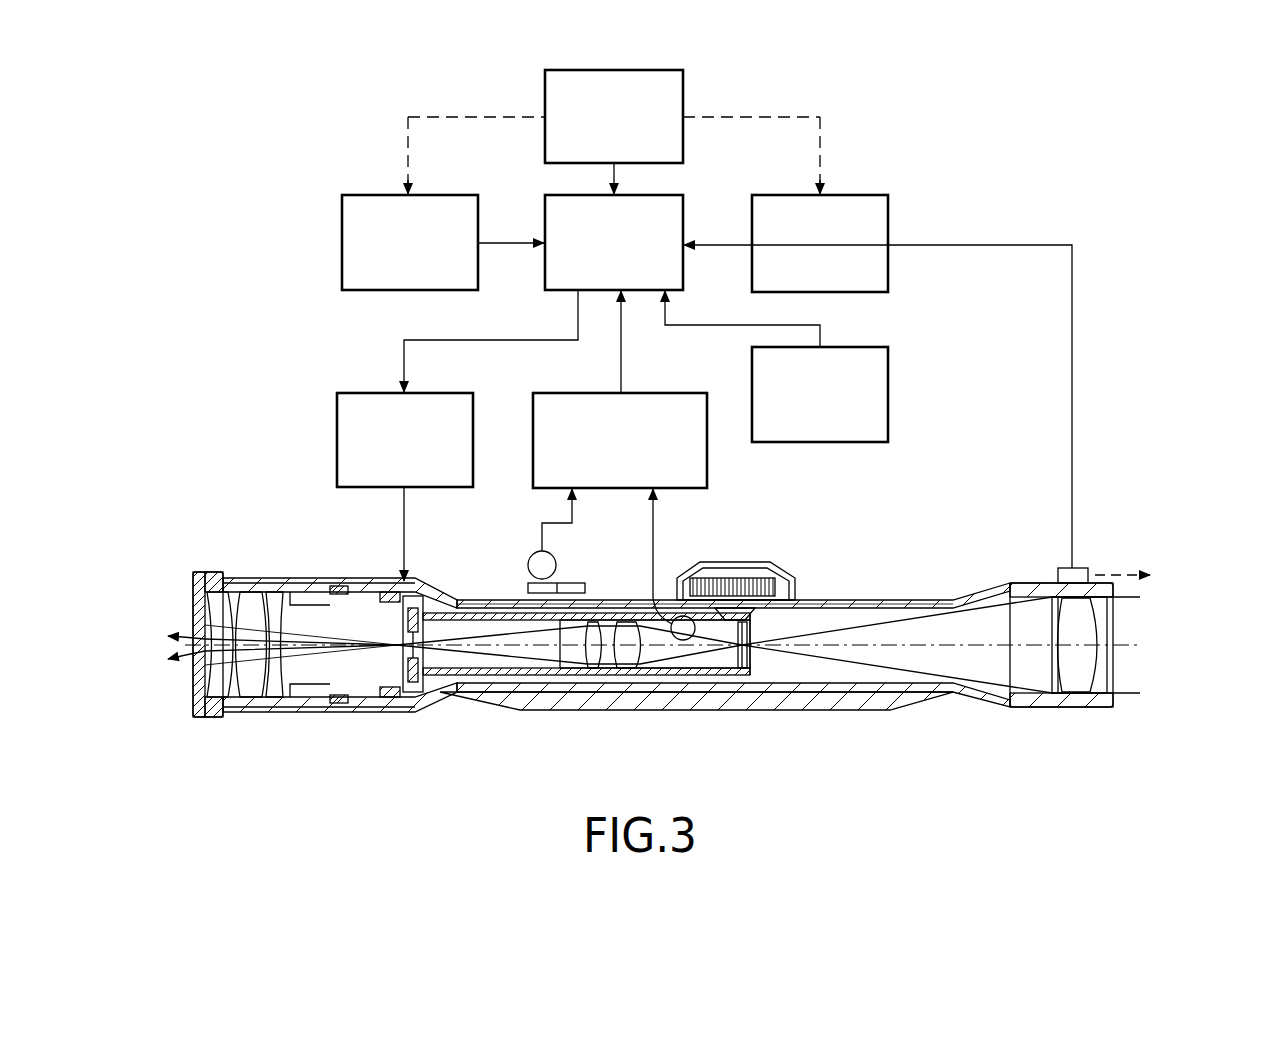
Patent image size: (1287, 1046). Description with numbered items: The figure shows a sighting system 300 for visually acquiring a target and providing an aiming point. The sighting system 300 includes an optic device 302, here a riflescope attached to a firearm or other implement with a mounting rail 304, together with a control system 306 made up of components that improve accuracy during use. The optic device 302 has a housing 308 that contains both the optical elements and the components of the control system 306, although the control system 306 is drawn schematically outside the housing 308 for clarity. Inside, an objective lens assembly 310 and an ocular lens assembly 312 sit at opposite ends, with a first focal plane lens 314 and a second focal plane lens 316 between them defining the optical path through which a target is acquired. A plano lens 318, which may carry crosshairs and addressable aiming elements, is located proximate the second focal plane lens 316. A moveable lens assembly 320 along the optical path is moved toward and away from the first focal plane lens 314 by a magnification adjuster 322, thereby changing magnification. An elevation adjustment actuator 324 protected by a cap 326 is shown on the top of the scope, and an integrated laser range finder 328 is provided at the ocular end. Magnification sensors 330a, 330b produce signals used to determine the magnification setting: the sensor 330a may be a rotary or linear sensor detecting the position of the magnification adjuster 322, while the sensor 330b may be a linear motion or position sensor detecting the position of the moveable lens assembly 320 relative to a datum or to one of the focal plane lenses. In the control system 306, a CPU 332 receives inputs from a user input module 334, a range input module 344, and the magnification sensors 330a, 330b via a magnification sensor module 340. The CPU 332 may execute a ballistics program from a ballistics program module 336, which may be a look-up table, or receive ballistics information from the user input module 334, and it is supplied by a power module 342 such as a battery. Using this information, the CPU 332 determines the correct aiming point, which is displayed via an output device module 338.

The sighting system 300 is at (282, 308).
The optic device 302 is at (780, 752).
The mounting rail 304 is at (707, 711).
The control system 306 is at (900, 156).
The housing 308 is at (380, 582).
The objective lens assembly 310 is at (1068, 707).
The ocular lens assembly 312 is at (250, 703).
The first focal plane lens 314 is at (748, 662).
The second focal plane lens 316 is at (432, 684).
The plano lens 318 is at (412, 692).
The moveable lens assembly 320 is at (612, 622).
The magnification adjuster 322 is at (528, 588).
The elevation adjustment actuator 324 is at (795, 578).
The cap 326 is at (680, 600).
The integrated laser range finder 328 is at (1062, 568).
The magnification sensor 330a is at (530, 555).
The magnification sensor 330b is at (693, 617).
The CPU 332 is at (683, 277).
The user input module 334 is at (683, 142).
The ballistics program module 336 is at (342, 220).
The output device module 338 is at (473, 433).
The magnification sensor module 340 is at (707, 473).
The power module 342 is at (888, 401).
The range input module 344 is at (888, 268).